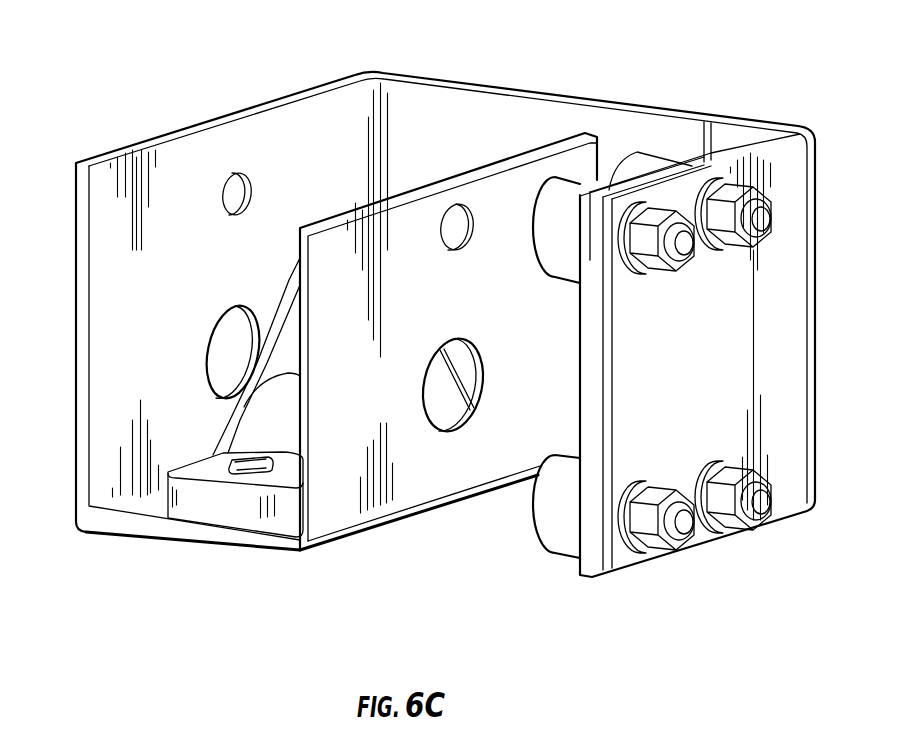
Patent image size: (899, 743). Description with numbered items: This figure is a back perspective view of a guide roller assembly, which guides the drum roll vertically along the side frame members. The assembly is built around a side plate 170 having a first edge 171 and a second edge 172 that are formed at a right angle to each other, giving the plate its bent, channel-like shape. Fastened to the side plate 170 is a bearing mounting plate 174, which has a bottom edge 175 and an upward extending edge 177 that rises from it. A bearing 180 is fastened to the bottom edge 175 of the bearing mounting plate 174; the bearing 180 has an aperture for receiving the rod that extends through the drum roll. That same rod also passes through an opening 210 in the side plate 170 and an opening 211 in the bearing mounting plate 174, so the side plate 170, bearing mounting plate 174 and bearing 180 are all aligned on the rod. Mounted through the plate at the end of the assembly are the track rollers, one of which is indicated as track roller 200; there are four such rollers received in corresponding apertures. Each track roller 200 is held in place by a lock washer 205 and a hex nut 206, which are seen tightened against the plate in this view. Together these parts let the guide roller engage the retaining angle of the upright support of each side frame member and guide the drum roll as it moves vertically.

The side plate 170 is at (283, 95).
The first edge 171 is at (417, 75).
The second edge 172 is at (82, 243).
The bearing mounting plate 174 is at (294, 549).
The bottom edge 175 is at (160, 527).
The upward extending edge 177 is at (427, 477).
The bearing 180 is at (212, 498).
The track roller 200 is at (575, 192).
The lock washer 205 is at (700, 215).
The hex nut 206 is at (719, 232).
The opening 210 is at (228, 347).
The opening 211 is at (450, 403).